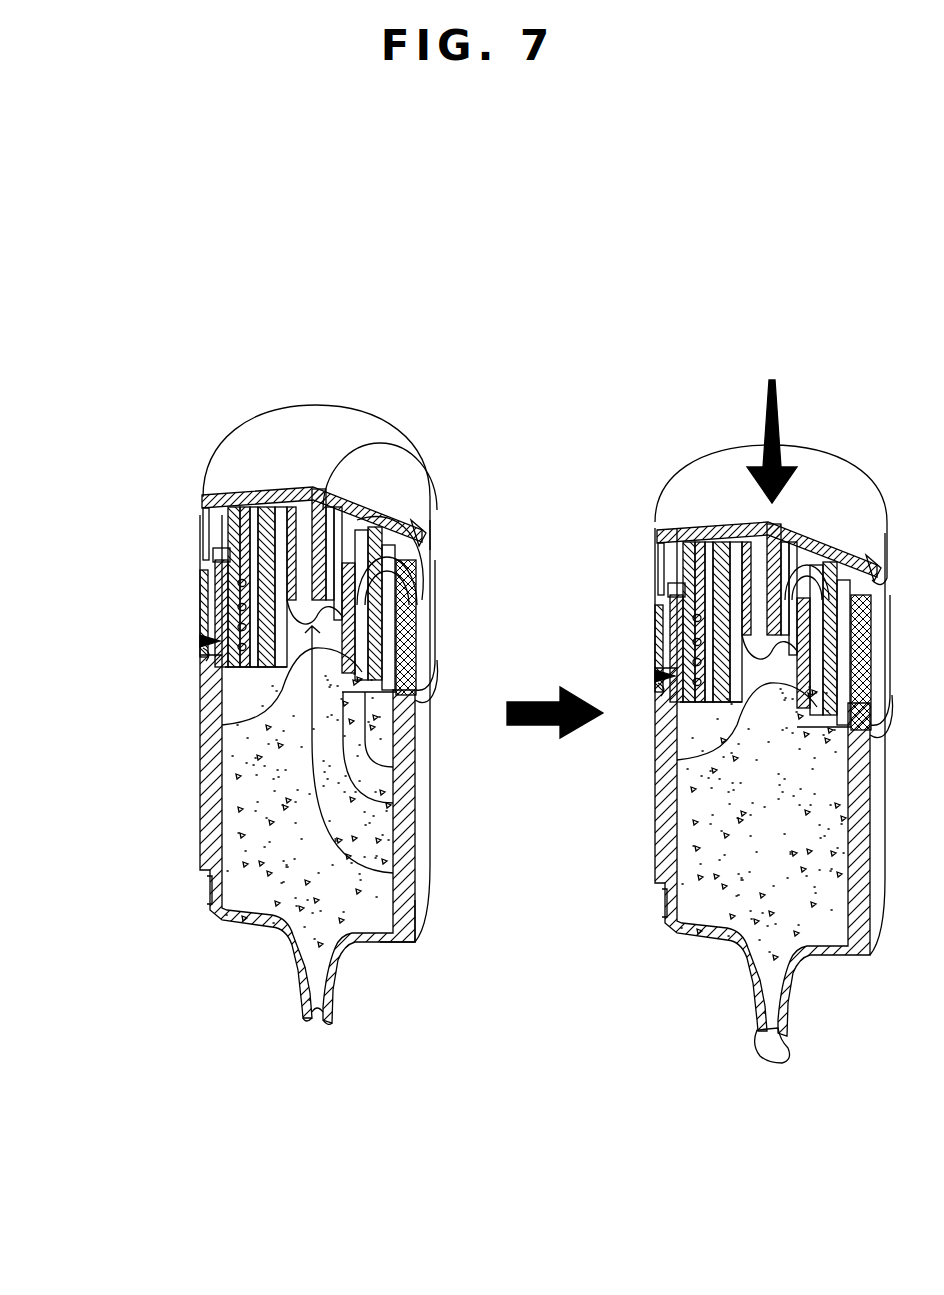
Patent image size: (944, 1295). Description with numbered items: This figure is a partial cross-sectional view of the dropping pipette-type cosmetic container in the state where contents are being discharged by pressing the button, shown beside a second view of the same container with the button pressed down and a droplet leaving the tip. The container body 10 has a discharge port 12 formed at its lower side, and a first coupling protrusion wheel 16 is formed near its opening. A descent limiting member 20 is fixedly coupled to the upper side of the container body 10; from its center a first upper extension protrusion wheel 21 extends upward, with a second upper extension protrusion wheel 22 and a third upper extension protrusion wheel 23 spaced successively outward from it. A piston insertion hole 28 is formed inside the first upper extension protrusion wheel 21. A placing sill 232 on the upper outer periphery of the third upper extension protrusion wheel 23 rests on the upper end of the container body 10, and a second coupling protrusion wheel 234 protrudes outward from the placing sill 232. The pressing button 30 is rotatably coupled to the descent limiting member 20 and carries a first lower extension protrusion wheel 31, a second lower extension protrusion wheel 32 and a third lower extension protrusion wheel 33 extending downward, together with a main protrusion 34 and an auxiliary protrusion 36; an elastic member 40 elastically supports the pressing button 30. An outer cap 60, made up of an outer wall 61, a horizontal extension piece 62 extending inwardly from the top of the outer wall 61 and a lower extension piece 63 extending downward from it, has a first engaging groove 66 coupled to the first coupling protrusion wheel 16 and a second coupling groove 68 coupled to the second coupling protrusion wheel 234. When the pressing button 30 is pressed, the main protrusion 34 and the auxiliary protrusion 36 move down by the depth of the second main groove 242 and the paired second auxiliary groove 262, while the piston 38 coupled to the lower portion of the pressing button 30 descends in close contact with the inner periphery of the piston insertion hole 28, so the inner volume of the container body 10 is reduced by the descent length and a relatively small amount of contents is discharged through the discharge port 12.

The container body 10 is at (190, 793).
The discharge port 12 is at (313, 1013).
The first coupling protrusion wheel 16 is at (402, 710).
The descent limiting member 20 is at (225, 630).
The first upper extension protrusion wheel 21 is at (402, 835).
The second upper extension protrusion wheel 22 is at (402, 795).
The third upper extension protrusion wheel 23 is at (402, 750).
The piston insertion hole 28 is at (402, 882).
The pressing button 30 is at (263, 420).
The first lower extension protrusion wheel 31 is at (327, 507).
The second lower extension protrusion wheel 32 is at (340, 505).
The third lower extension protrusion wheel 33 is at (422, 522).
The main protrusion 34 is at (352, 540).
The auxiliary protrusion 36 is at (248, 500).
The piston 38 is at (313, 693).
The elastic member 40 is at (208, 641).
The outer cap 60 is at (92, 543).
The outer wall 61 is at (232, 602).
The horizontal extension piece 62 is at (248, 548).
The lower extension piece 63 is at (238, 583).
The first engaging groove 66 is at (405, 662).
The second coupling groove 68 is at (418, 620).
The placing sill 232 is at (420, 645).
The second coupling protrusion wheel 234 is at (405, 592).
The second main groove 242 is at (400, 560).
The second auxiliary groove 262 is at (220, 525).